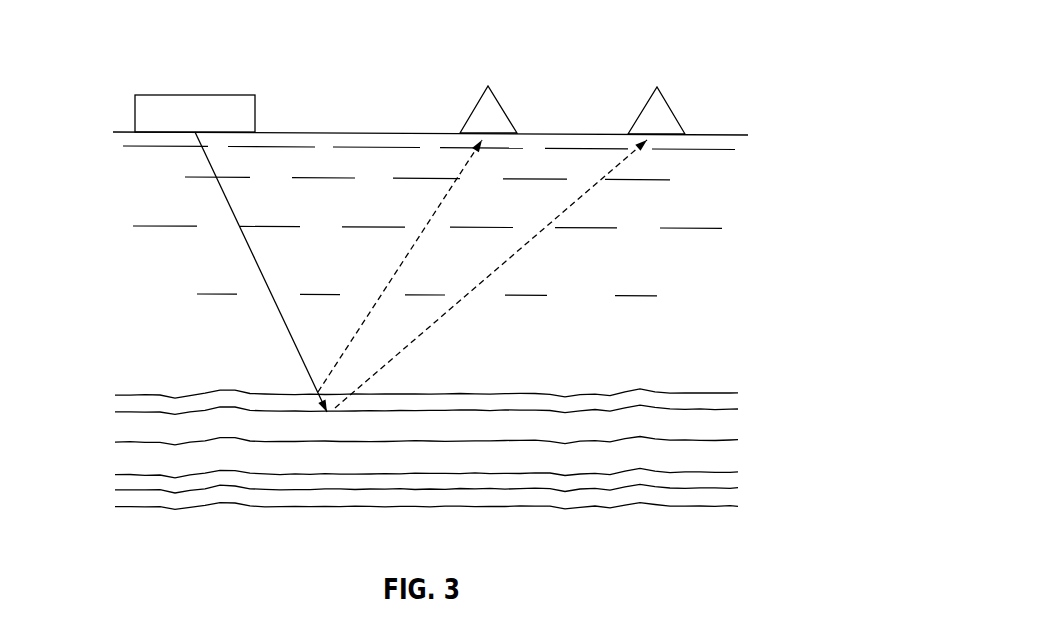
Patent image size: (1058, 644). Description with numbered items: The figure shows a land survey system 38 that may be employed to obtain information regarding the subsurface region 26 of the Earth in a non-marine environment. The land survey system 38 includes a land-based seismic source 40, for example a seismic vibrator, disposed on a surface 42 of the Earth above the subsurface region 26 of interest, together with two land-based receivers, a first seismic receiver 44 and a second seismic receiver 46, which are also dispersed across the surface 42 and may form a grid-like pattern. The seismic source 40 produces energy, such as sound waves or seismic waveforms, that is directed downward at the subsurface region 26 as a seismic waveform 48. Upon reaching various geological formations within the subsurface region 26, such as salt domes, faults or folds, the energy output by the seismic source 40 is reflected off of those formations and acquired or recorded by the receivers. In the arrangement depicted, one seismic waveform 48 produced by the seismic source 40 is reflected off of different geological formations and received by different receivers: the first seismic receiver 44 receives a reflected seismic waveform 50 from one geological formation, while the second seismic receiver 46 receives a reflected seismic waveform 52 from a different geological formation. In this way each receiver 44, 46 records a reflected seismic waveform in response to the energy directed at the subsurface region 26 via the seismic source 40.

The subsurface region 26 is at (102, 367).
The land survey system 38 is at (730, 36).
The seismic source 40 is at (178, 95).
The surface 42 is at (372, 131).
The first seismic receiver 44 is at (488, 86).
The second seismic receiver 46 is at (657, 87).
The seismic waveform 48 is at (259, 276).
The reflected seismic waveform 50 is at (399, 270).
The reflected seismic waveform 52 is at (494, 268).